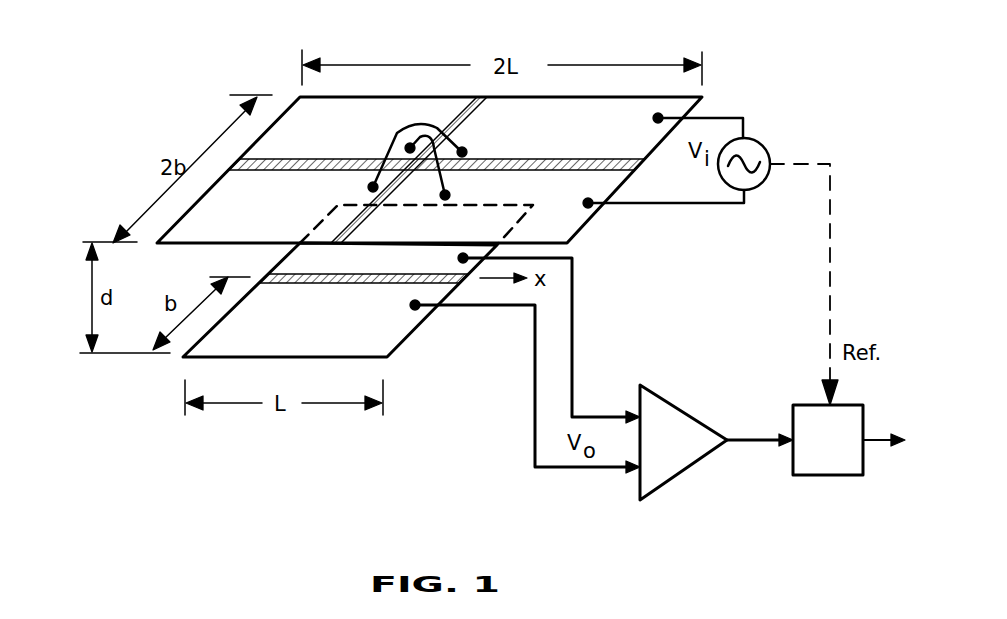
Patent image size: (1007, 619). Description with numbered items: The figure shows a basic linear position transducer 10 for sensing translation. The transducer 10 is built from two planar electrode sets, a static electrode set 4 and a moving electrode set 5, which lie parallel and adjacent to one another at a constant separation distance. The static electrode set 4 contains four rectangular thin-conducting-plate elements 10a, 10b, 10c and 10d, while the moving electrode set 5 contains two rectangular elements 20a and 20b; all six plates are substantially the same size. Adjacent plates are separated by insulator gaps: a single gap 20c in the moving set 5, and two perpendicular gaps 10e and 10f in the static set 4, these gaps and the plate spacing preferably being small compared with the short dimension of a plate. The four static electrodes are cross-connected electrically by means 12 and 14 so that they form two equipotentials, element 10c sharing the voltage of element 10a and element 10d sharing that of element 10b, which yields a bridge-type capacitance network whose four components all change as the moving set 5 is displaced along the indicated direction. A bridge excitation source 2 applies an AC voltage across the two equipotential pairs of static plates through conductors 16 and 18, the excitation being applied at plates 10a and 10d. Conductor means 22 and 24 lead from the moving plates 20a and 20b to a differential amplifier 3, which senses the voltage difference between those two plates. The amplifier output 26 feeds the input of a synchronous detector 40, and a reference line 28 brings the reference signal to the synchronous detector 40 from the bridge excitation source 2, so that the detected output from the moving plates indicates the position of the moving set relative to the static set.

The bridge excitation source 2 is at (766, 146).
The differential amplifier 3 is at (683, 442).
The static electrode set 4 is at (289, 90).
The moving electrode set 5 is at (438, 340).
The linear position transducer 10 is at (350, 445).
The rectangular element 10a is at (564, 131).
The rectangular element 10b is at (317, 136).
The rectangular element 10c is at (265, 209).
The rectangular element 10d is at (562, 195).
The insulator gap 10e is at (638, 168).
The insulator gap 10f is at (480, 95).
The cross-connecting means 12 is at (410, 125).
The cross-connecting means 14 is at (450, 180).
The conductor 16 is at (703, 206).
The conductor 18 is at (712, 118).
The rectangular element 20a is at (417, 259).
The rectangular element 20b is at (362, 315).
The insulator gap 20c is at (265, 275).
The conductor means 22 is at (572, 316).
The conductor means 24 is at (535, 432).
The amplifier output 26 is at (752, 438).
The reference signal line 28 is at (830, 255).
The synchronous detector 40 is at (849, 440).